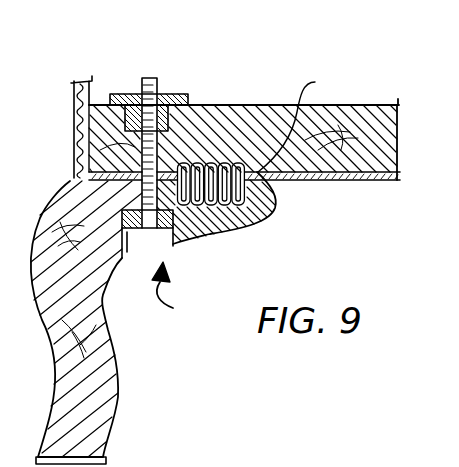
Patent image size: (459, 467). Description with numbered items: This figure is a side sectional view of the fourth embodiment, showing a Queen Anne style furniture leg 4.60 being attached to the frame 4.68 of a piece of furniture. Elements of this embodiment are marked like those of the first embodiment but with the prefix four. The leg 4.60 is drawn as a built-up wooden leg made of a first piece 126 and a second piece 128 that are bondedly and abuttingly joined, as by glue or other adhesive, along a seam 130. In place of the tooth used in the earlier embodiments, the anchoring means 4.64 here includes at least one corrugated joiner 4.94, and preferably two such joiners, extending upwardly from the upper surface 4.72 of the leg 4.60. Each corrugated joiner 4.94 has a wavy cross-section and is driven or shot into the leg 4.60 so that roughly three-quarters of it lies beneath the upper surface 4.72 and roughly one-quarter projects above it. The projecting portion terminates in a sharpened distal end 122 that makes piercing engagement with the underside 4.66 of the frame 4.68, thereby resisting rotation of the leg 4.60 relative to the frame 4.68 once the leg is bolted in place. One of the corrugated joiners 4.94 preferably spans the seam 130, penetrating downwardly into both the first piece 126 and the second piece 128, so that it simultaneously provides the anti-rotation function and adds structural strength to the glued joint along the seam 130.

The sharpened distal end 122 is at (207, 160).
The first piece 126 is at (180, 228).
The second piece 128 is at (230, 217).
The seam 130 is at (195, 227).
The furniture leg 4.60 is at (97, 290).
The anchoring means 4.64 is at (192, 293).
The underside 4.66 is at (350, 178).
The frame 4.68 is at (268, 117).
The upper surface 4.72 is at (315, 117).
The corrugated joiner 4.94 is at (250, 188).